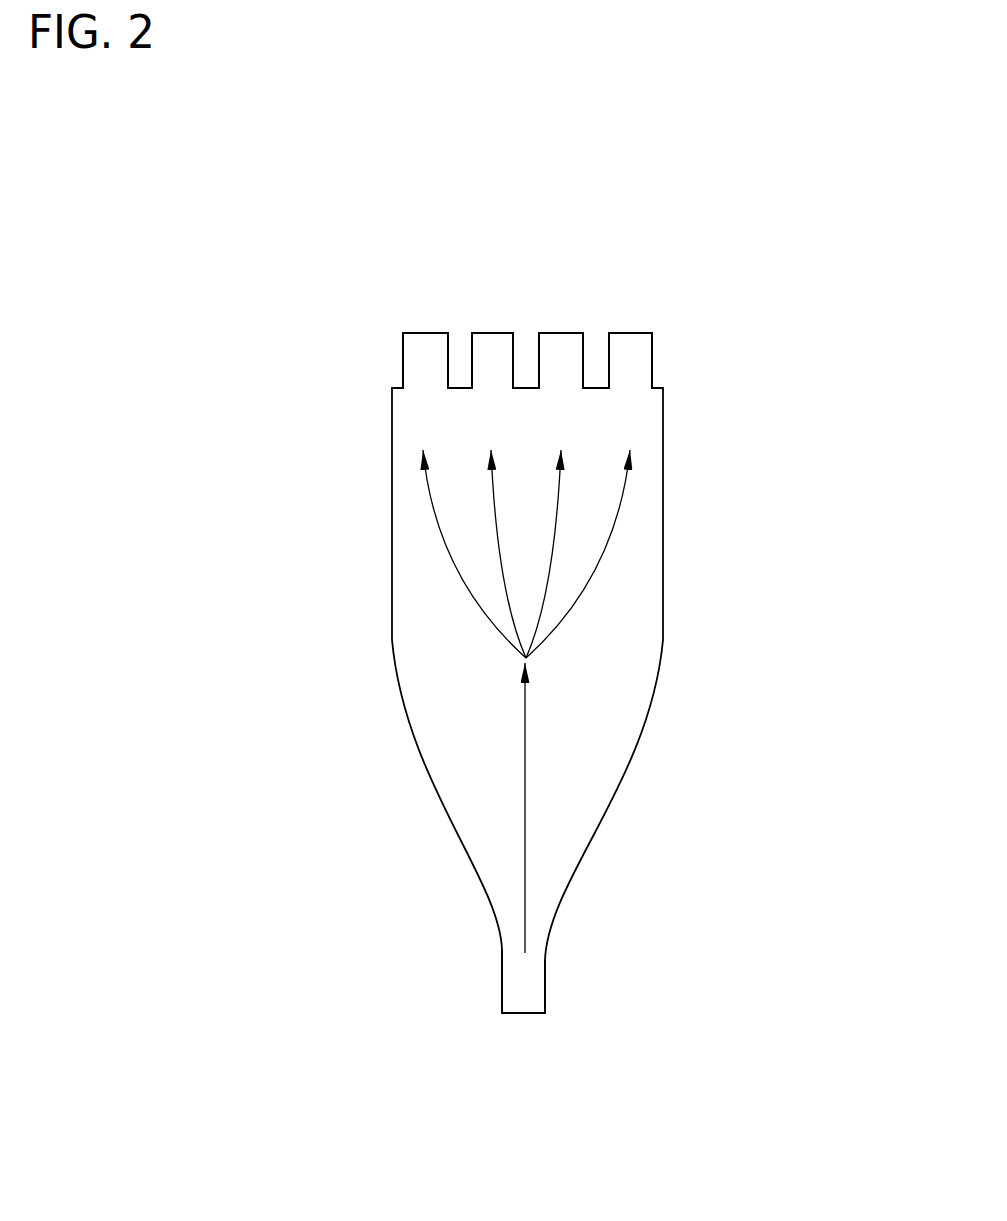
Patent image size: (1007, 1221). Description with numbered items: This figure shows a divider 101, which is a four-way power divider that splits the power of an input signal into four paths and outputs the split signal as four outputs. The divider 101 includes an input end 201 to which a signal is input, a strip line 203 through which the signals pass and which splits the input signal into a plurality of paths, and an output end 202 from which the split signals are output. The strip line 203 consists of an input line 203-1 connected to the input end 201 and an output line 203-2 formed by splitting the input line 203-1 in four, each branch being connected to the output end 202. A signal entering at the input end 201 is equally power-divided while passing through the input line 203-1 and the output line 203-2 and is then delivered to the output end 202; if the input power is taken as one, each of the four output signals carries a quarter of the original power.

The divider 101 is at (718, 500).
The input end 201 is at (535, 990).
The output end 202 is at (638, 277).
The strip line 203 is at (391, 701).
The input line 203-1 is at (525, 740).
The output line 203-2 is at (455, 565).